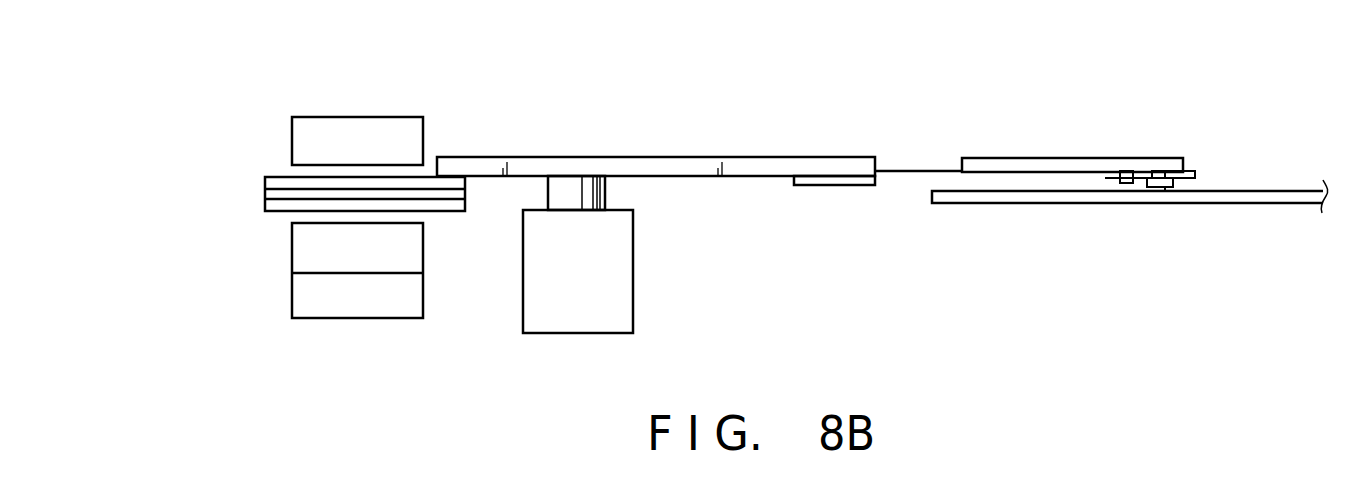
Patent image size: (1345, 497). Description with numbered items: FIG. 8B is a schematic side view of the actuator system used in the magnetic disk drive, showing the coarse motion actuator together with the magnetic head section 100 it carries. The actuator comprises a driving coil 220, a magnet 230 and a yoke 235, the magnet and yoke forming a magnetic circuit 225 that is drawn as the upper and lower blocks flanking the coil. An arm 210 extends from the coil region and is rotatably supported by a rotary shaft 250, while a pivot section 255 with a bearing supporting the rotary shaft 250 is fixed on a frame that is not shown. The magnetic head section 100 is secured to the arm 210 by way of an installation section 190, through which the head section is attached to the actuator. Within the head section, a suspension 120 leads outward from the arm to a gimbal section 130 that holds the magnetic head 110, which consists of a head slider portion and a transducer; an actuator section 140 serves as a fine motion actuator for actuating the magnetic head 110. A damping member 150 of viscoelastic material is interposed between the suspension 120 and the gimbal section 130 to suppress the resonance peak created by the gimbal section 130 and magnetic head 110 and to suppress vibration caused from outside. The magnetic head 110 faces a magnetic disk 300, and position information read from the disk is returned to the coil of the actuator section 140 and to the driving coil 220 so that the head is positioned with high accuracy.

The magnetic head section 100 is at (987, 140).
The magnetic head 110 is at (1165, 203).
The suspension 120 is at (923, 170).
The gimbal section 130 is at (1195, 170).
The actuator section 140 is at (1128, 168).
The damping member 150 is at (1159, 171).
The installation section 190 is at (820, 187).
The arm 210 is at (665, 158).
The driving coil 220 is at (265, 185).
The magnetic circuit 225 is at (378, 95).
The magnet 230 is at (303, 245).
The yoke 235 is at (308, 135).
The rotary shaft 250 is at (567, 187).
The pivot section 255 is at (565, 323).
The magnetic disk 300 is at (1005, 207).